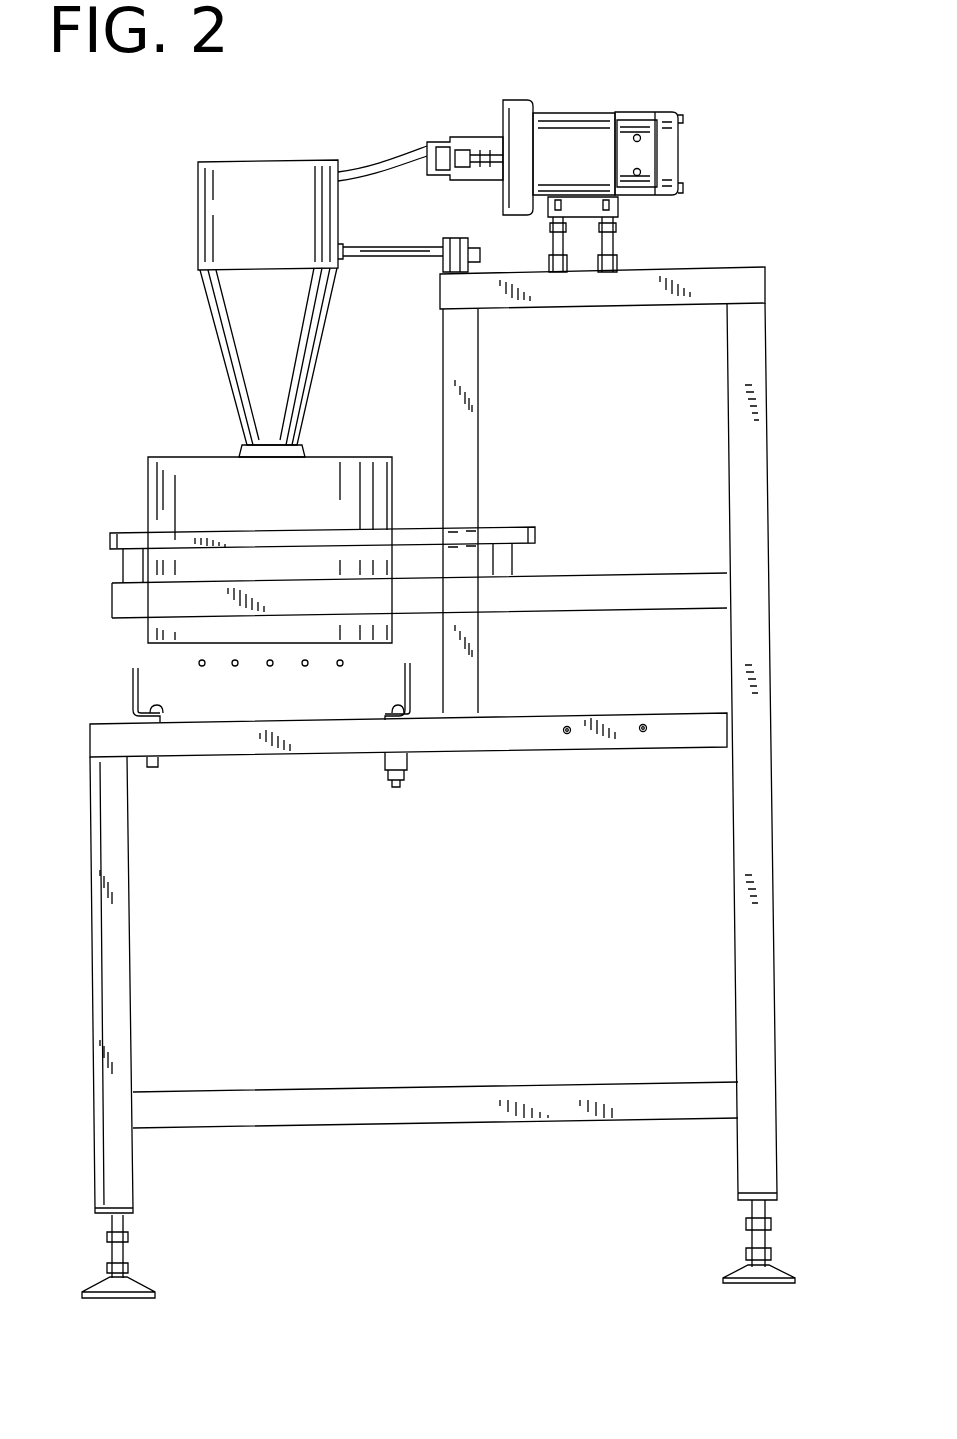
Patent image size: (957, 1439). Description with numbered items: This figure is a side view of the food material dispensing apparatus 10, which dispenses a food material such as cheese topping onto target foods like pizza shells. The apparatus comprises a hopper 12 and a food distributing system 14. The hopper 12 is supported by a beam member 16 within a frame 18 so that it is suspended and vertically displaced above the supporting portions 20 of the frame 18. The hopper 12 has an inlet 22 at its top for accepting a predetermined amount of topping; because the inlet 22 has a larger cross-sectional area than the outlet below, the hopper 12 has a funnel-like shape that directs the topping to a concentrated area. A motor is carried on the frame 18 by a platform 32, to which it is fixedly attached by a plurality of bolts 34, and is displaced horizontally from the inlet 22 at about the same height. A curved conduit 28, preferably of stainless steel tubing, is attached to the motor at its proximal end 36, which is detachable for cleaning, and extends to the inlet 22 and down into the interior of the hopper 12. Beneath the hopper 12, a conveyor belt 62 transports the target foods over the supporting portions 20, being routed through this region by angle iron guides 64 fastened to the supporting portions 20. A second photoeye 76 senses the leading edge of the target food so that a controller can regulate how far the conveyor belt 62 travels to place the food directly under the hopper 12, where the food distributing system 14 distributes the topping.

The food material dispensing apparatus 10 is at (108, 268).
The hopper 12 is at (202, 304).
The food distributing system 14 is at (403, 133).
The beam member 16 is at (380, 270).
The frame 18 is at (773, 542).
The supporting portions 20 is at (78, 726).
The inlet 22 is at (258, 152).
The curved conduit 28 is at (364, 158).
The platform 32 is at (715, 267).
The bolts 34 is at (548, 244).
The proximal end 36 is at (421, 172).
The conveyor belt 62 is at (268, 669).
The angle iron guides 64 is at (126, 692).
The second photoeye 76 is at (690, 166).